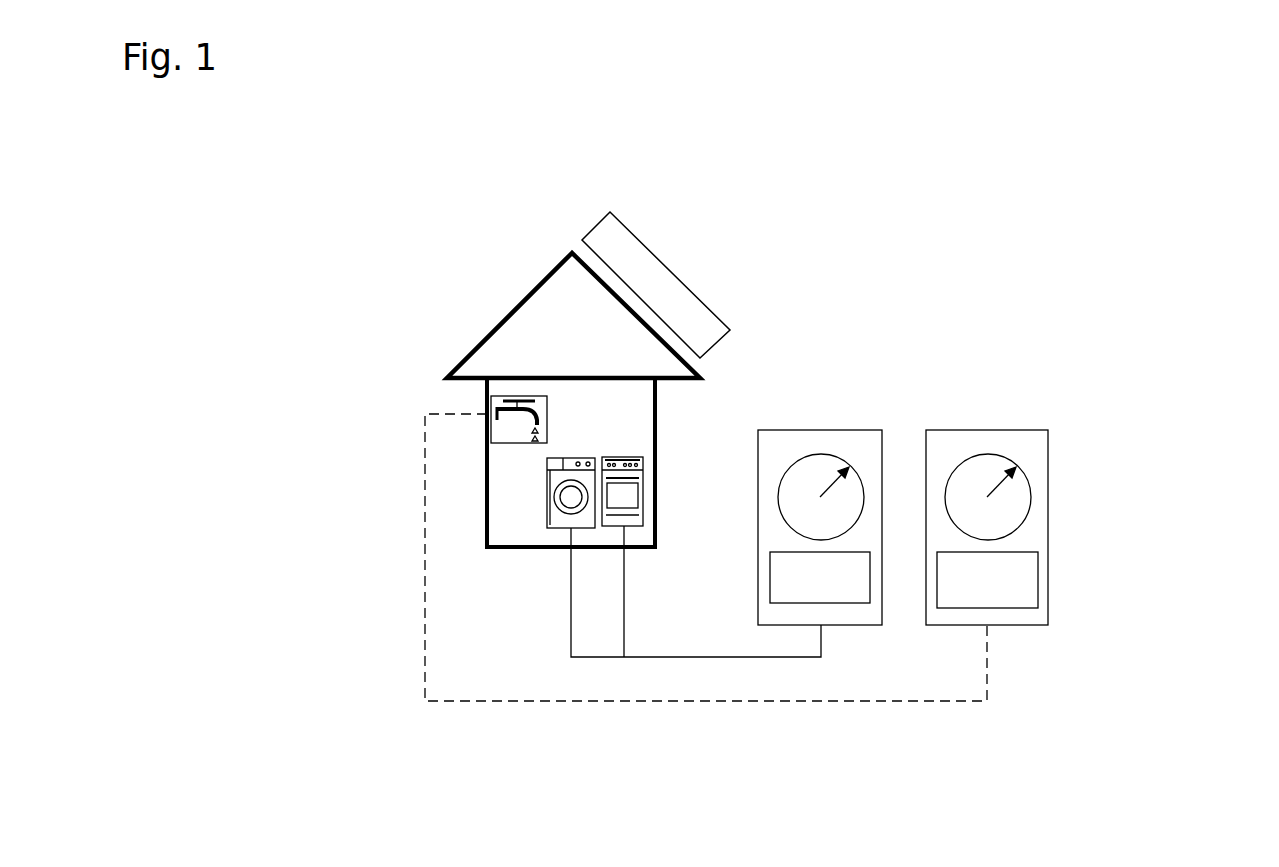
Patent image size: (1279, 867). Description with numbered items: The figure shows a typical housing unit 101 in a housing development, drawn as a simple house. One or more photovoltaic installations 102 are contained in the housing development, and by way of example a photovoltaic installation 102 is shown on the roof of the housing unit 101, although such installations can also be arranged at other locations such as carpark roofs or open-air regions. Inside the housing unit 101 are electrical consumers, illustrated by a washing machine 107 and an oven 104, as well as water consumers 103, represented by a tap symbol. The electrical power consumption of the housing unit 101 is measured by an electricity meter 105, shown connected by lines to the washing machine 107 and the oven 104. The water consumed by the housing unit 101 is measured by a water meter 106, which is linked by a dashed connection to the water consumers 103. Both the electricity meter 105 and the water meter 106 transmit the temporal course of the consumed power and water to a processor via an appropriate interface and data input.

The housing unit 101 is at (535, 315).
The photovoltaic installation 102 is at (645, 280).
The water consumers 103 is at (491, 404).
The oven 104 is at (638, 457).
The electricity meter 105 is at (813, 445).
The water meter 106 is at (1032, 512).
The washing machine 107 is at (557, 547).